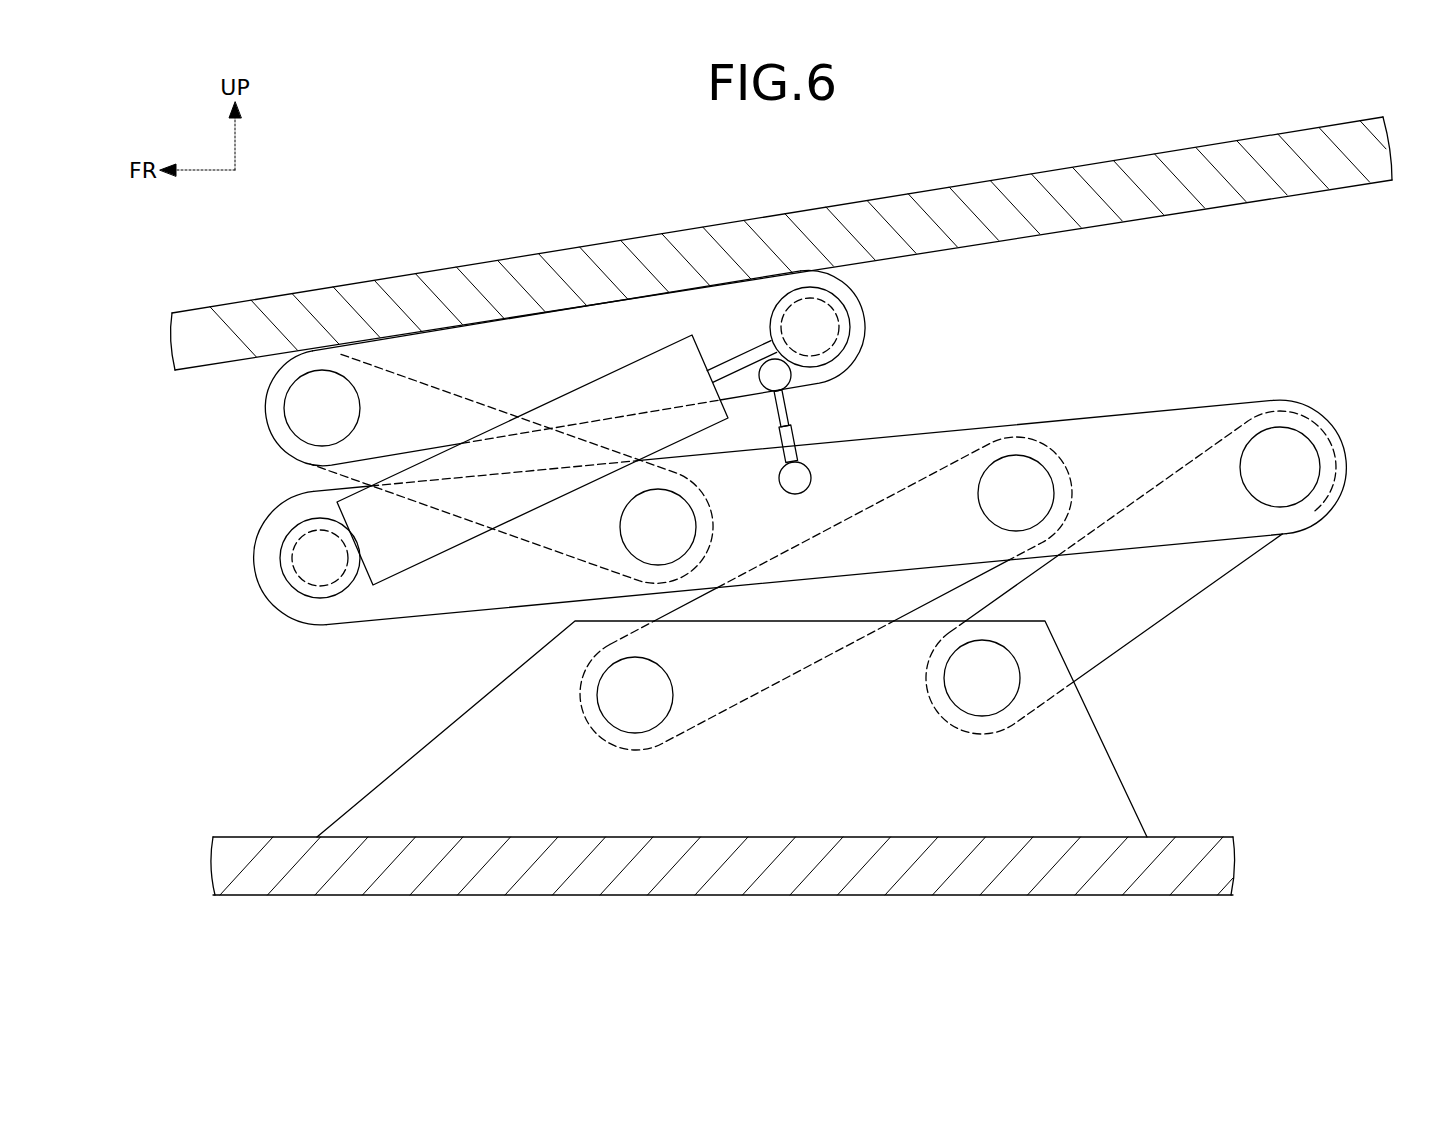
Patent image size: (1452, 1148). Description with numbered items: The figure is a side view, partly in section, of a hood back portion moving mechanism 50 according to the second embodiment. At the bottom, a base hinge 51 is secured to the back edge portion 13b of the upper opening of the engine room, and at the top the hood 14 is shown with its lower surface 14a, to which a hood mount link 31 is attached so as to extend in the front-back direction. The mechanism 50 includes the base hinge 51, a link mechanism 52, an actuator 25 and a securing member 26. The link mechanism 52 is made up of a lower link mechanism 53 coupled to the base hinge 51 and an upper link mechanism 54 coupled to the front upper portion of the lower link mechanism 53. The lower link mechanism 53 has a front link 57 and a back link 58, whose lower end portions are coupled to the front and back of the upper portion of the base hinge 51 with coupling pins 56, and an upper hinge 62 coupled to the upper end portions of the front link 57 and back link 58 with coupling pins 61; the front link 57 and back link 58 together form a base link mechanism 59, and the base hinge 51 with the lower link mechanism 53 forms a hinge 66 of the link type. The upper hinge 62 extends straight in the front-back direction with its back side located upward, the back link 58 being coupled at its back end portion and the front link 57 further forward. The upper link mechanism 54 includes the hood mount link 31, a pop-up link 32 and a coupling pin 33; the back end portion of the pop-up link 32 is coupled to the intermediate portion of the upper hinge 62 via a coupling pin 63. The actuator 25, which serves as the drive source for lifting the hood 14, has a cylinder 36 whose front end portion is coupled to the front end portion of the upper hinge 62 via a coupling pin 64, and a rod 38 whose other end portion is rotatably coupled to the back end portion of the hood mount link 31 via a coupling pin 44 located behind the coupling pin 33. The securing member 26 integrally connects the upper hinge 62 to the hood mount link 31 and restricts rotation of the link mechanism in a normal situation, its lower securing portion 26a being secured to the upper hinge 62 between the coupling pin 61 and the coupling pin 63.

The back edge portion 13b is at (1207, 835).
The hood 14 is at (897, 194).
The lower surface 14a is at (1145, 219).
The actuator 25 is at (557, 374).
The securing member 26 is at (789, 414).
The securing portion 26a is at (811, 478).
The hood mount link 31 is at (567, 321).
The pop-up link 32 is at (517, 540).
The coupling pin 33 is at (300, 410).
The cylinder 36 is at (570, 413).
The rod 38 is at (740, 352).
The coupling pin 44 is at (867, 318).
The hood back portion moving mechanism 50 is at (1358, 347).
The base hinge 51 is at (1105, 772).
The link mechanism 52 is at (811, 480).
The lower link mechanism 53 is at (1141, 572).
The upper link mechanism 54 is at (453, 366).
The coupling pin 56 is at (612, 697).
The front link 57 is at (773, 687).
The back link 58 is at (1170, 600).
The base link mechanism 59 is at (1107, 637).
The coupling pin 61 is at (1017, 472).
The upper hinge 62 is at (1101, 433).
The coupling pin 63 is at (632, 535).
The coupling pin 64 is at (282, 562).
The hinge 66 is at (1340, 430).